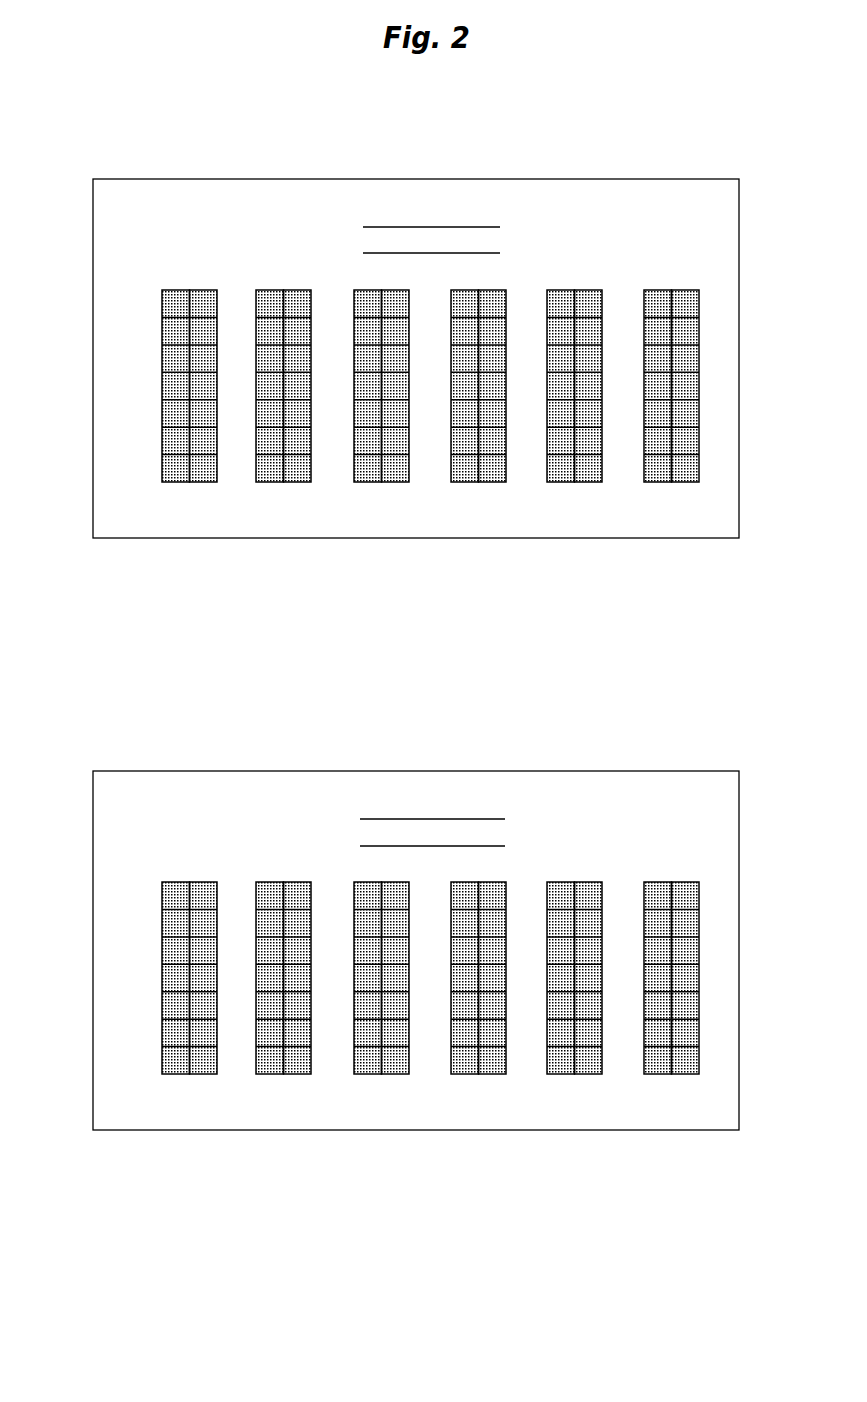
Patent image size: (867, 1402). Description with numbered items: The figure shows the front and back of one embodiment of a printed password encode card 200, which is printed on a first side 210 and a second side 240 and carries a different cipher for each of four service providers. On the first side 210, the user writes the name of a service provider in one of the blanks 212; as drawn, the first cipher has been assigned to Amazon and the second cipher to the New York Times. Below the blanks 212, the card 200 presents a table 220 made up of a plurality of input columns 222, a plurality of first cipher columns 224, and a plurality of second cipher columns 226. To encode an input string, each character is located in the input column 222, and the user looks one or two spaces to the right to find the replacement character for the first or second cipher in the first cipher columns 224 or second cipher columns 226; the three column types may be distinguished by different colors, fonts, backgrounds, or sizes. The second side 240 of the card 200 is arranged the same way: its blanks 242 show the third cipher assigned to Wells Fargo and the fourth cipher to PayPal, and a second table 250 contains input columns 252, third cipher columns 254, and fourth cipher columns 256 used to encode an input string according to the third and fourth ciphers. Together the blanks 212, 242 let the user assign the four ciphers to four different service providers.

The printed password encode card 200 is at (600, 179).
The first side 210 is at (712, 235).
The blanks 212 is at (310, 247).
The table 220 is at (712, 331).
The input columns 222 is at (146, 484).
The first cipher columns 224 is at (176, 484).
The second cipher columns 226 is at (203, 484).
The second side 240 is at (725, 826).
The blanks 242 is at (310, 839).
The second table 250 is at (714, 949).
The input columns 252 is at (146, 1076).
The third cipher columns 254 is at (176, 1076).
The fourth cipher columns 256 is at (203, 1076).